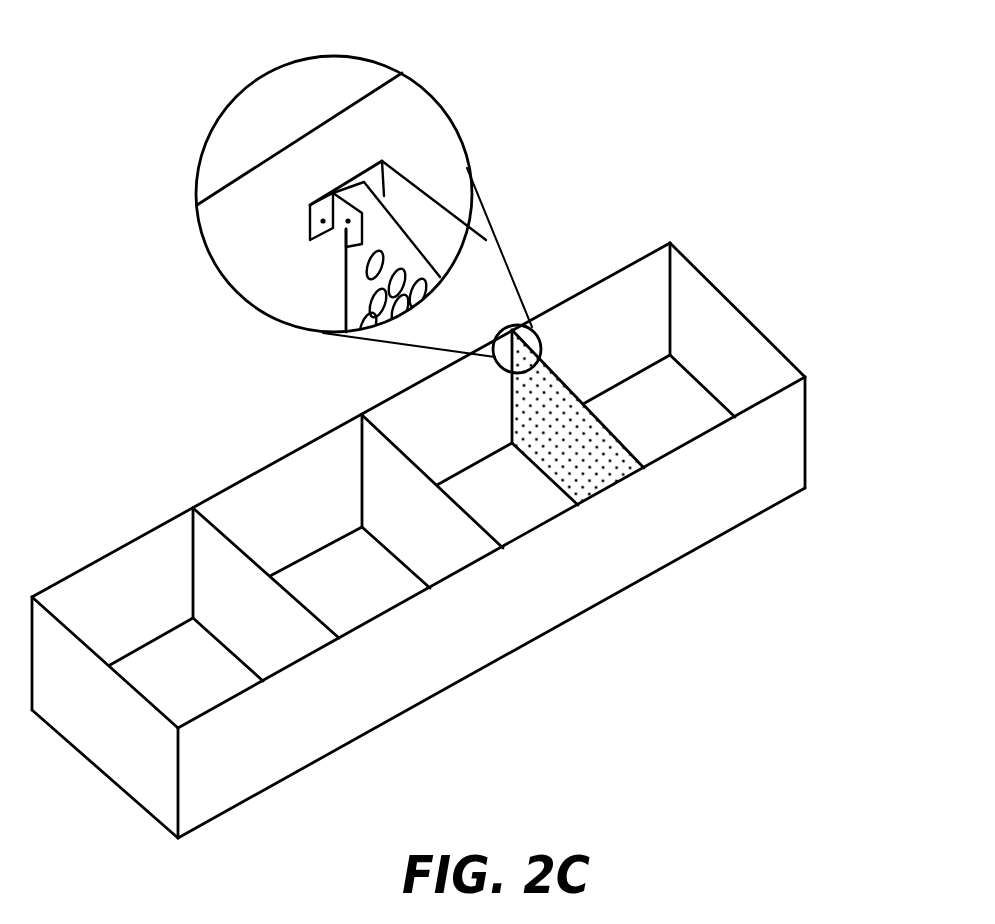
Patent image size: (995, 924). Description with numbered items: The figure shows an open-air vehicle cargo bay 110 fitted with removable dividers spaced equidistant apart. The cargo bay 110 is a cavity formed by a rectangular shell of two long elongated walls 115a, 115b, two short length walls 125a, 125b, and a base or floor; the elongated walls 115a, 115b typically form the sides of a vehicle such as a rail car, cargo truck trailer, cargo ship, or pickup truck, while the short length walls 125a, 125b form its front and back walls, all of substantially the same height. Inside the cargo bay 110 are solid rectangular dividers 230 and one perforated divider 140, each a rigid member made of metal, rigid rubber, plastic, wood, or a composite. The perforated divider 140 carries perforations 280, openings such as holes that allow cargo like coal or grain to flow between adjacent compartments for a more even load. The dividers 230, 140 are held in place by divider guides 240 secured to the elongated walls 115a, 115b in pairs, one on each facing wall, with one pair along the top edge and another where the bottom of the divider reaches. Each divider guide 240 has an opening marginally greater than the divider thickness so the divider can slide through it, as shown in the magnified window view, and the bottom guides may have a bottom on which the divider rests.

The cargo bay 110 is at (423, 540).
The elongated wall 115a is at (725, 520).
The elongated wall 115b is at (605, 297).
The short length wall 125a is at (718, 313).
The short length wall 125b is at (75, 735).
The perforated divider 140 is at (580, 433).
The removable divider 230 is at (407, 510).
The divider guide 240 is at (417, 102).
The perforations 280 is at (383, 256).